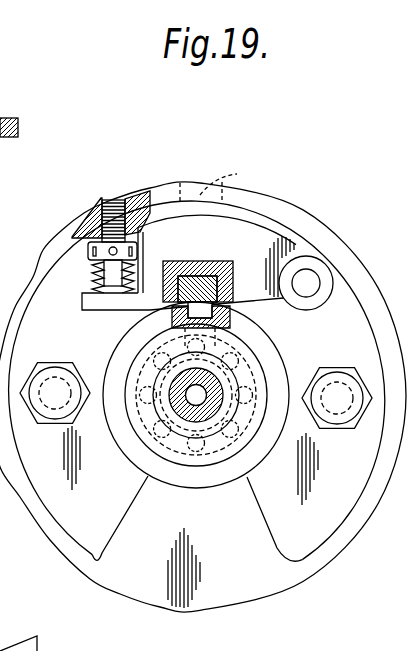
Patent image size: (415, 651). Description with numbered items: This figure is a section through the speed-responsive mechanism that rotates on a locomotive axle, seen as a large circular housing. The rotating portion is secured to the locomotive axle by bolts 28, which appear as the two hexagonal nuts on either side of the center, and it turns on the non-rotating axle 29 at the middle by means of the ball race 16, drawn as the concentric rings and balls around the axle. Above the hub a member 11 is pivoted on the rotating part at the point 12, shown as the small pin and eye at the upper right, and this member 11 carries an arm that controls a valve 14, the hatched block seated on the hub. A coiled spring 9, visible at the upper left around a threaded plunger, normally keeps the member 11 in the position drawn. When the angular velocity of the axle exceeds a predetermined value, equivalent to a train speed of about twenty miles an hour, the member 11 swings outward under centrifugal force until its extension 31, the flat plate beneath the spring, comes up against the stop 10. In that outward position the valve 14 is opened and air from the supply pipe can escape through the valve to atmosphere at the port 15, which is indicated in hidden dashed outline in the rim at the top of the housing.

The coiled spring 9 is at (97, 277).
The stop 10 is at (112, 274).
The member 11 is at (270, 233).
The point 12 is at (313, 284).
The valve 14 is at (197, 266).
The port 15 is at (237, 174).
The ball race 16 is at (238, 368).
The bolts 28 is at (55, 422).
The axle 29 is at (200, 412).
The extension 31 is at (110, 308).